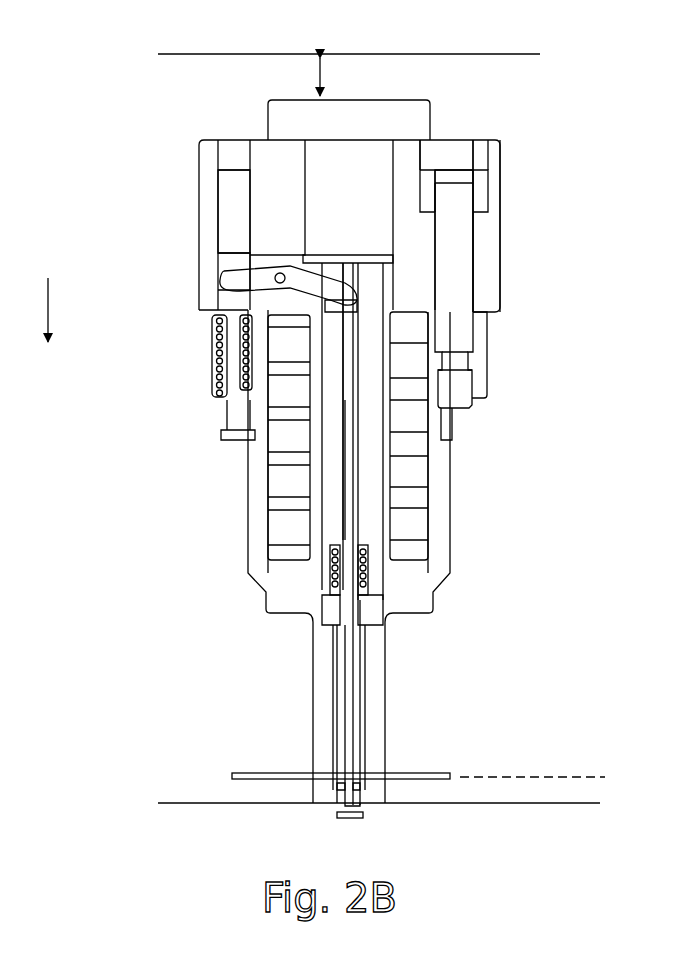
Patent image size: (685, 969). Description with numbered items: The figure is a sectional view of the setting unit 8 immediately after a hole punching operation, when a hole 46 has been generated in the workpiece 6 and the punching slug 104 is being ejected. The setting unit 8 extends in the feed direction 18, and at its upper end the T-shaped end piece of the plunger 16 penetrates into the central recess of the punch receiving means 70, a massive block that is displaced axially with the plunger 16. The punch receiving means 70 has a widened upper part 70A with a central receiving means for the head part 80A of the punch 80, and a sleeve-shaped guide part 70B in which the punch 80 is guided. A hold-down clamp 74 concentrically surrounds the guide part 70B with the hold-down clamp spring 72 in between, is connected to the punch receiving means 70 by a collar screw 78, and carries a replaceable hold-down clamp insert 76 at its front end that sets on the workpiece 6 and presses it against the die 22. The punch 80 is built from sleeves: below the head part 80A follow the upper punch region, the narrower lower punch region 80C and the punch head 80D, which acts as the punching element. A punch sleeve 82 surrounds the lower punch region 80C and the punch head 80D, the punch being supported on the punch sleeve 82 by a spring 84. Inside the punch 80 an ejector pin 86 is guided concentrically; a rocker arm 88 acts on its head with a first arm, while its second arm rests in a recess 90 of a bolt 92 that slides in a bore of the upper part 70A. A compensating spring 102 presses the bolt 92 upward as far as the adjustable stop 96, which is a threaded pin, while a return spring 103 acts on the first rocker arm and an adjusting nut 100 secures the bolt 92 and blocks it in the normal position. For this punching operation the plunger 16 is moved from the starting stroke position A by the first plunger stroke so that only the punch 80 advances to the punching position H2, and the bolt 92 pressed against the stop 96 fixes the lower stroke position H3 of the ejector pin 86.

The workpiece 6 is at (238, 773).
The setting unit 8 is at (156, 521).
The plunger 16 is at (415, 120).
The feed direction 18 is at (85, 310).
The die 22 is at (372, 803).
The hole 46 is at (368, 783).
The punch receiving means 70 is at (491, 268).
The widened upper part 70A is at (487, 288).
The guide part 70B is at (383, 396).
The hold-down clamp spring 72 is at (405, 470).
The hold-down clamp 74 is at (430, 500).
The hold-down clamp insert 76 is at (380, 657).
The screw 78 is at (458, 330).
The punch 80 is at (363, 452).
The head part 80A is at (386, 268).
The lower punch region 80C is at (353, 688).
The punch head 80D is at (360, 752).
The punch sleeve 82 is at (375, 597).
The spring 84 is at (370, 556).
The ejector pin 86 is at (350, 657).
The rocker arm 88 is at (255, 279).
The recess 90 is at (238, 265).
The bolt 92 is at (235, 196).
The adjustable stop 96 is at (232, 148).
The adjusting nut 100 is at (225, 432).
The compensating spring 102 is at (215, 345).
The return spring 103 is at (345, 383).
The punching slug 104 is at (340, 818).
The starting stroke position A is at (540, 54).
The punching position H2 is at (590, 777).
The lower stroke position H3 is at (600, 803).